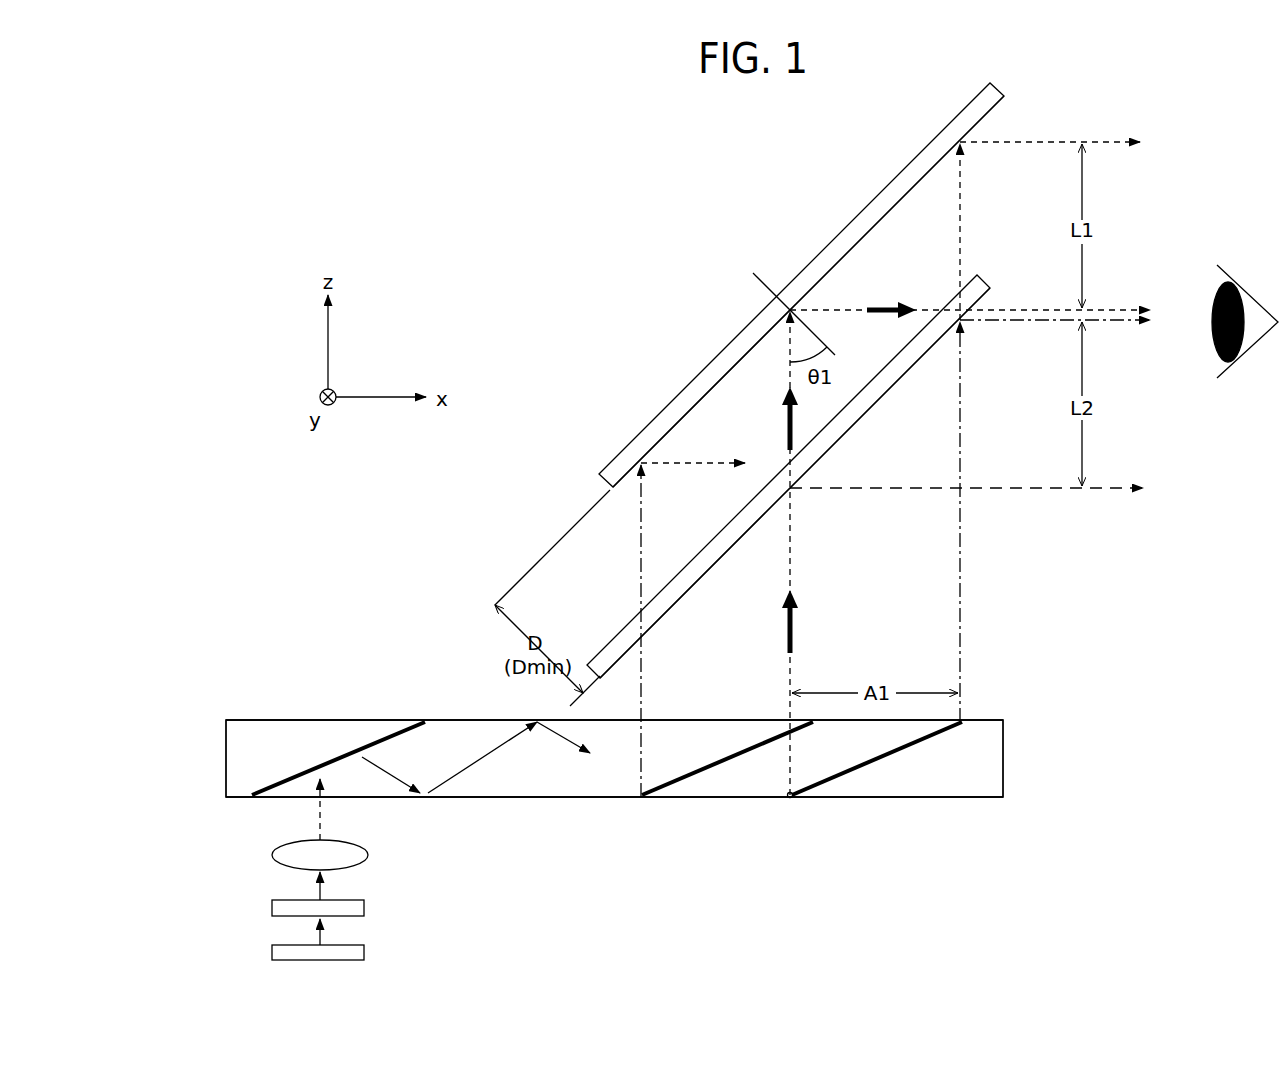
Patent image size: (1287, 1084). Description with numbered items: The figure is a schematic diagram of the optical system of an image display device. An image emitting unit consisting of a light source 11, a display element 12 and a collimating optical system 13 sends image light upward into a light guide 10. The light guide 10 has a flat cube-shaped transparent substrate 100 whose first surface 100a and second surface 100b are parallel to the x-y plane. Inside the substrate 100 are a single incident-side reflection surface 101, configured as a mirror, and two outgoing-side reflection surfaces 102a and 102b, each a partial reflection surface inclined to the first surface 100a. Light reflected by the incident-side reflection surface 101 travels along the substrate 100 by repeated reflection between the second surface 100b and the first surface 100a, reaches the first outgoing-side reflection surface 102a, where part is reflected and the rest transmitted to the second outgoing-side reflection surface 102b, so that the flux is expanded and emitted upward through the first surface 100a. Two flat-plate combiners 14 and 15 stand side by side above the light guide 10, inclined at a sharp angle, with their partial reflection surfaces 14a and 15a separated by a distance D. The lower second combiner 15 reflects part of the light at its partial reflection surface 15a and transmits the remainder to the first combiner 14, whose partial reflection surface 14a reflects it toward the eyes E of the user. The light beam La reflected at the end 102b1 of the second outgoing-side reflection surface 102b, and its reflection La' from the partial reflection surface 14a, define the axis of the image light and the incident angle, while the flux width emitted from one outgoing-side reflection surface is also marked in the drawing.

The light guide 10 is at (1026, 731).
The light source 11 is at (272, 952).
The display element 12 is at (272, 906).
The collimating optical system 13 is at (273, 852).
The first combiner 14 is at (616, 455).
The partial reflection surface 14a is at (716, 386).
The second combiner 15 is at (633, 620).
The partial reflection surface 15a is at (708, 576).
The substrate 100 is at (263, 731).
The first surface 100a is at (455, 719).
The second surface 100b is at (455, 798).
The incident-side reflection surface 101 is at (392, 728).
The first outgoing-side reflection surface 102a is at (690, 779).
The second outgoing-side reflection surface 102b is at (840, 776).
The end of second exit mirror 102b1 is at (789, 798).
The light beam La is at (772, 523).
The light beam La' is at (891, 292).
The eyes E is at (1219, 351).